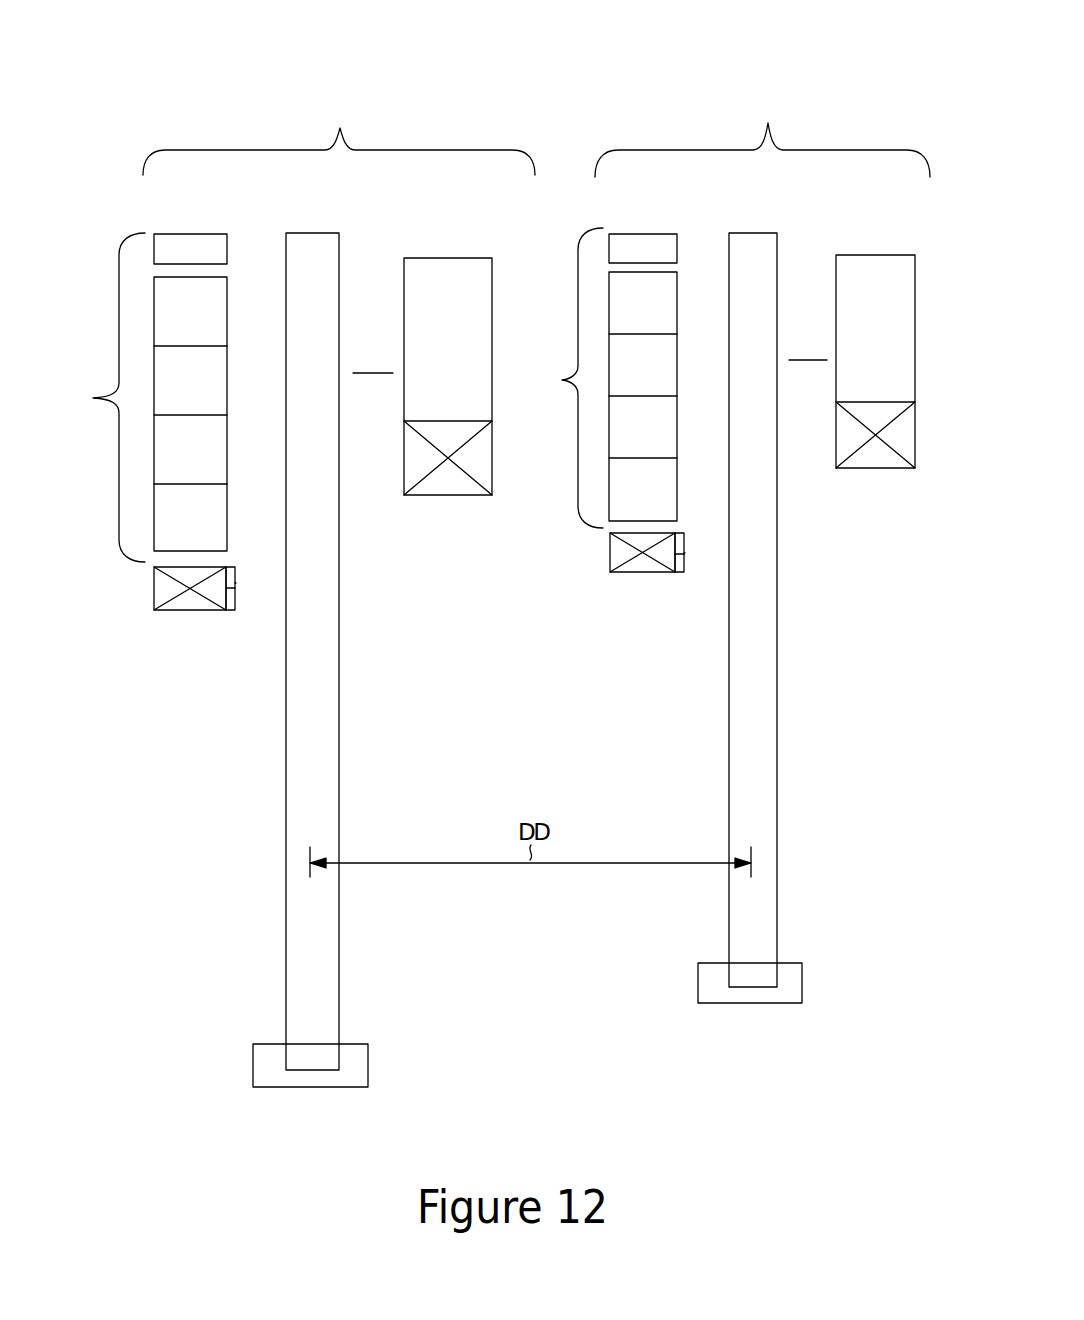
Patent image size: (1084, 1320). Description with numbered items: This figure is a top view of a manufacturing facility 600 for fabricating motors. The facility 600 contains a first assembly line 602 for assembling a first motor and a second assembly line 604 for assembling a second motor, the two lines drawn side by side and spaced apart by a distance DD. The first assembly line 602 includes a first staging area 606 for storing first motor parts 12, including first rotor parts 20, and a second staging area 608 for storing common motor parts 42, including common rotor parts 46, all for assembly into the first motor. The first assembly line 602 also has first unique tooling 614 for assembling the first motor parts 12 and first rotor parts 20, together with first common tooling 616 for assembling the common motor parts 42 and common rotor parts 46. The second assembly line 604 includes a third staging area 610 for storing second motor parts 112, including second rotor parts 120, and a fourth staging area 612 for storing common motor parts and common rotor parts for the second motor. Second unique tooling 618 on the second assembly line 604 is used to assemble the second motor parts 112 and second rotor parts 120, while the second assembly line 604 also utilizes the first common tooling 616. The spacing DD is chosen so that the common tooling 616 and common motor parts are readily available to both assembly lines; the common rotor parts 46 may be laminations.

The manufacturing facility 600 is at (222, 63).
The first assembly line 602 is at (339, 135).
The second assembly line 604 is at (762, 136).
The first staging area 606 is at (96, 397).
The second staging area 608 is at (191, 626).
The third staging area 610 is at (560, 378).
The fourth staging area 612 is at (643, 585).
The first unique tooling 614 is at (447, 246).
The first common tooling 616 is at (442, 497).
The second unique tooling 618 is at (874, 243).
The first rotor parts 20 is at (228, 248).
The first motor parts 12 is at (238, 323).
The second rotor parts 120 is at (677, 250).
The second motor parts 112 is at (688, 308).
The common rotor parts 46 is at (245, 577).
The common motor parts 42 is at (248, 618).